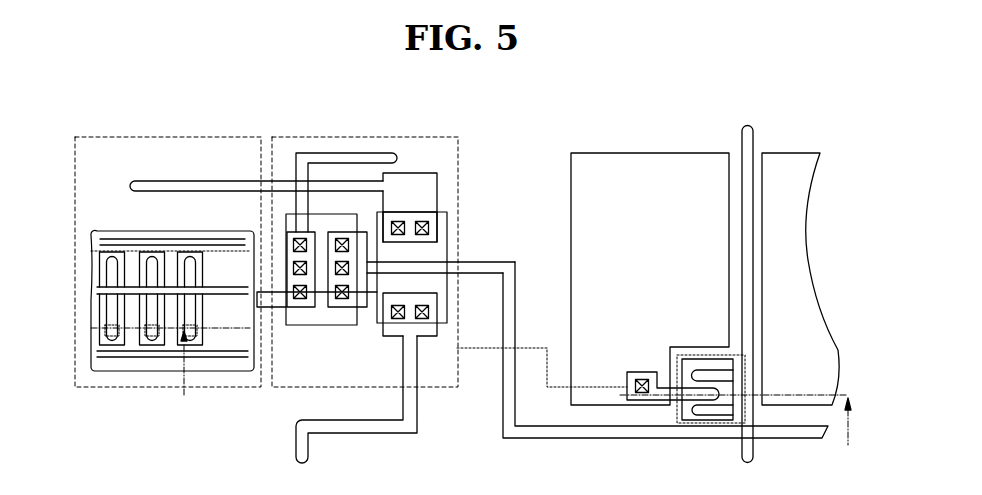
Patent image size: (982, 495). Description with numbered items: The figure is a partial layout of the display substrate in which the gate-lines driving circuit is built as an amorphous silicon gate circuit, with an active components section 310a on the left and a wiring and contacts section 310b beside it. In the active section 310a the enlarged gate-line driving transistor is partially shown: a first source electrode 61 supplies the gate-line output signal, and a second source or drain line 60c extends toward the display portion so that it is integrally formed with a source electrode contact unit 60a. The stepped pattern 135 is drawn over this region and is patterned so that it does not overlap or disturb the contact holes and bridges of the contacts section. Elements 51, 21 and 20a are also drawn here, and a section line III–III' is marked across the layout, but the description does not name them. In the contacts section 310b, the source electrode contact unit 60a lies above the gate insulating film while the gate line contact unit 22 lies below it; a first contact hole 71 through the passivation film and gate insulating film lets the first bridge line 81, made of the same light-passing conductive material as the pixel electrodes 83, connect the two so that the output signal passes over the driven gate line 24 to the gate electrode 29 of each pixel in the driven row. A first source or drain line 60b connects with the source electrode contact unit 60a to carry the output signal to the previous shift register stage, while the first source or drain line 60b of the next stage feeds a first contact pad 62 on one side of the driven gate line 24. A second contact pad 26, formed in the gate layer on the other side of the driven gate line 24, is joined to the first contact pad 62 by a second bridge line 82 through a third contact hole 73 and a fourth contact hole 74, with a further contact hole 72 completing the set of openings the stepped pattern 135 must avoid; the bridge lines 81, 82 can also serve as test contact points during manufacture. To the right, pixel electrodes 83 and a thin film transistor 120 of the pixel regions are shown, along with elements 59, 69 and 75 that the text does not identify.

The active components section 310a is at (158, 137).
The wiring and contacts section 310b is at (390, 137).
The gate electrode 51 is at (117, 232).
The semiconductor layer 21 is at (150, 239).
The first source electrode 61 is at (176, 250).
The second source or drain line 60c is at (150, 372).
The stepped pattern 135 is at (118, 372).
The gate line 20a is at (223, 180).
The first source or drain line 60b is at (345, 153).
The first contact hole 71 is at (287, 232).
The source electrode contact unit 60a is at (293, 326).
The first bridge line 81 is at (315, 326).
The contact hole 72 is at (367, 247).
The gate line contact unit 22 is at (358, 326).
The second contact pad 26 is at (437, 185).
The fourth contact hole 74 is at (437, 224).
The second bridge line 82 is at (447, 240).
The first contact pad 62 is at (437, 332).
The third contact hole 73 is at (397, 337).
The pixel electrodes 83 is at (570, 263).
The driven gate line 24 is at (528, 426).
The gate electrode 29 is at (748, 405).
The thin film transistor 120 is at (685, 355).
The semiconductor 59 is at (722, 420).
The source electrode 69 is at (708, 420).
The drain electrode 75 is at (641, 372).
The section line III is at (170, 371).
The section line end III' is at (736, 430).